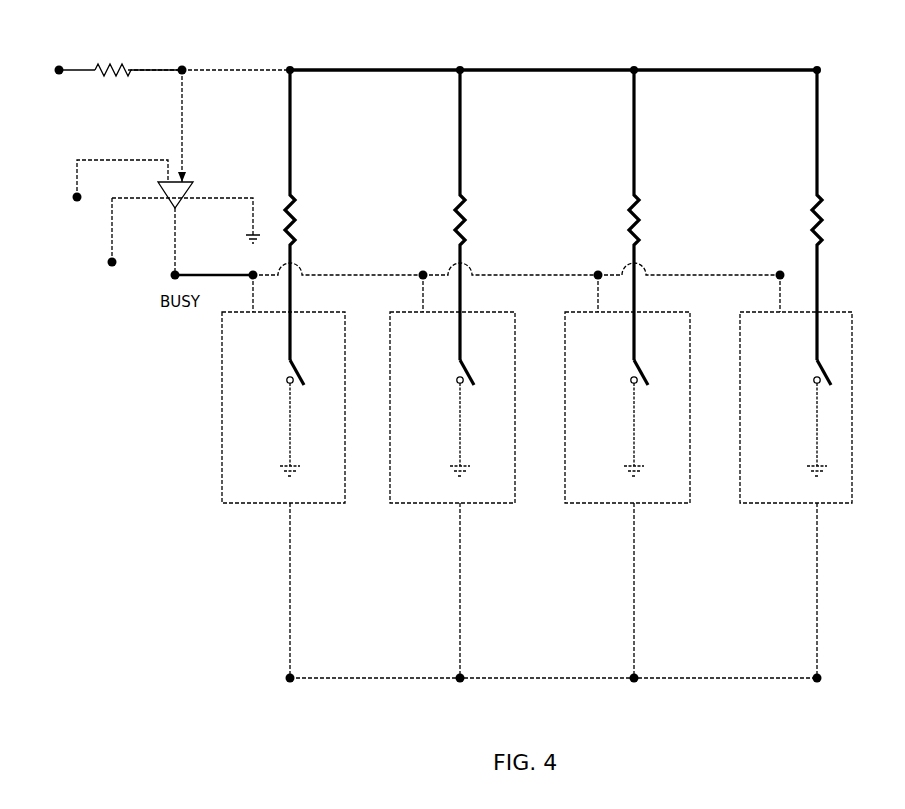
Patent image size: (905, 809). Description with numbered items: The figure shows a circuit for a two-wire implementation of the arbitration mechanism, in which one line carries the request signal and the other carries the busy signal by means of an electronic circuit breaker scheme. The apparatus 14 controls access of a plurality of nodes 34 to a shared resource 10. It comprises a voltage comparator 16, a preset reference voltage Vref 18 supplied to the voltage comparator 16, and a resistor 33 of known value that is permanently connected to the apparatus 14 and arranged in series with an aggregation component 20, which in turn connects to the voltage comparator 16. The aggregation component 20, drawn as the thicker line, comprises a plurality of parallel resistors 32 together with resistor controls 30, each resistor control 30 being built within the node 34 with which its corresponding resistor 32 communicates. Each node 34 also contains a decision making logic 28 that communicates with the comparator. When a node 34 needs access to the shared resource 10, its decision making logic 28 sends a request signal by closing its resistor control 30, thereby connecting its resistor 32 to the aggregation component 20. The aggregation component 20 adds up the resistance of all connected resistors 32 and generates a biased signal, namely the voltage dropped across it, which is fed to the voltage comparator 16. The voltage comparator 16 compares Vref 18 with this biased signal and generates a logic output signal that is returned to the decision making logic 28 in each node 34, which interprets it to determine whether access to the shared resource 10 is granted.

The shared resource 10 is at (518, 678).
The apparatus 14 is at (622, 50).
The voltage comparator 16 is at (184, 177).
The Vref 18 is at (84, 194).
The aggregation component 20 is at (548, 112).
The decision making logic 28 is at (240, 368).
The resistor control 30 is at (300, 393).
The parallel resistor 32 is at (302, 222).
The resistor 33 is at (181, 54).
The node 34 is at (314, 505).